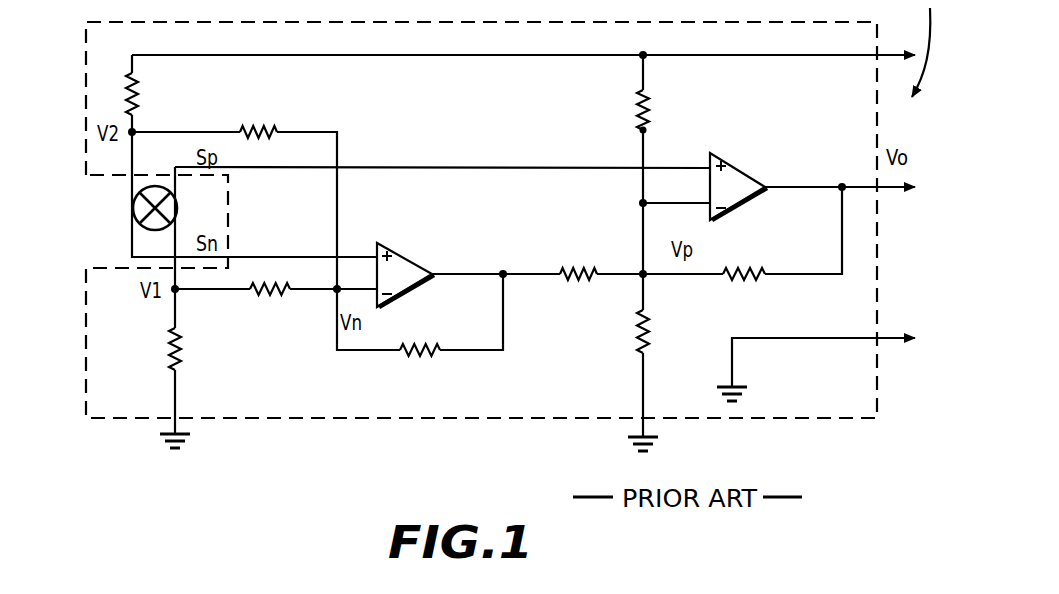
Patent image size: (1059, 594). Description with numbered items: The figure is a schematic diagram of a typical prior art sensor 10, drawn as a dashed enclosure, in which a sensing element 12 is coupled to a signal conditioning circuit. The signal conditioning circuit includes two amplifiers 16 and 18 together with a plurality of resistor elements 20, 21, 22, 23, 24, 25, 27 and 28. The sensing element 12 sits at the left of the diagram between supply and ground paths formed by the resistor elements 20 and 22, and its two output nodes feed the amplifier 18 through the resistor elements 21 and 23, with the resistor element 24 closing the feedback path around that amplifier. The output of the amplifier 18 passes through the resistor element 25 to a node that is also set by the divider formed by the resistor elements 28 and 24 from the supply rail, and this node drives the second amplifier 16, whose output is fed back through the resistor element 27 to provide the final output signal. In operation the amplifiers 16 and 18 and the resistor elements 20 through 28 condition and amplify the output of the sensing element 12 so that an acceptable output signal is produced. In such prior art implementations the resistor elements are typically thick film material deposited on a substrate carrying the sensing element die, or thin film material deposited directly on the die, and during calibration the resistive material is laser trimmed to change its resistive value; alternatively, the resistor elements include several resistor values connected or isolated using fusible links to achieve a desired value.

The prior art sensor 10 is at (73, 327).
The sensing element 12 is at (136, 197).
The amplifier 16 is at (750, 176).
The amplifier 18 is at (420, 268).
The resistor element 20 is at (136, 81).
The resistor element 21 is at (278, 128).
The resistor element 22 is at (180, 344).
The resistor element 23 is at (280, 293).
The resistor element 24 is at (429, 352).
The resistor element 25 is at (592, 280).
The resistor element 27 is at (757, 279).
The resistor element 28 is at (651, 107).